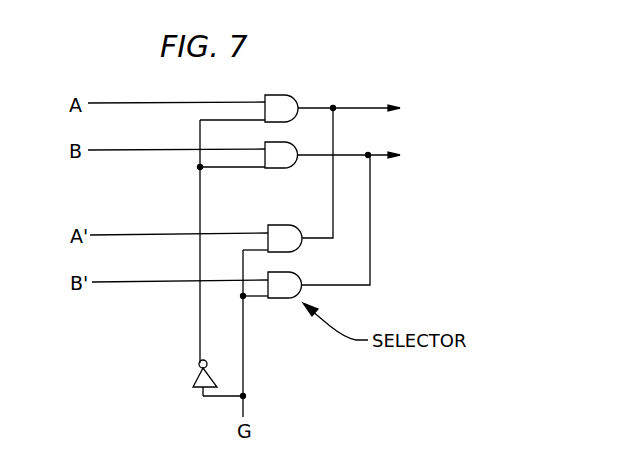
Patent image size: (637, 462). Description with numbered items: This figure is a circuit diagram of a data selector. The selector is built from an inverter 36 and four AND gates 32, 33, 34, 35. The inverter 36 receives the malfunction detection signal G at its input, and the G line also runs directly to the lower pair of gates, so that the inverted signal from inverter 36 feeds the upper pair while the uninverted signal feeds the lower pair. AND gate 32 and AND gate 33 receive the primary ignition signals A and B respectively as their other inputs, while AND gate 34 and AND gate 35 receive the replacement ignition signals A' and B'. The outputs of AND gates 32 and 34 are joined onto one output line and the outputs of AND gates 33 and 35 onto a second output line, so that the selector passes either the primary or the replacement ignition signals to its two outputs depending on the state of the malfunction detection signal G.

The AND gate 32 is at (283, 95).
The AND gate 33 is at (285, 142).
The AND gate 34 is at (285, 225).
The AND gate 35 is at (287, 272).
The inverter 36 is at (199, 365).